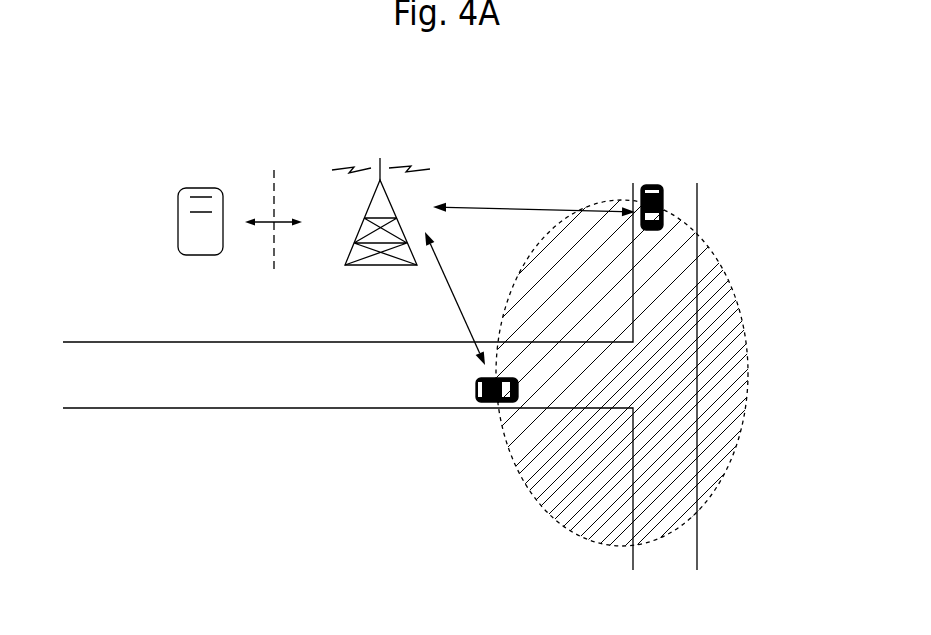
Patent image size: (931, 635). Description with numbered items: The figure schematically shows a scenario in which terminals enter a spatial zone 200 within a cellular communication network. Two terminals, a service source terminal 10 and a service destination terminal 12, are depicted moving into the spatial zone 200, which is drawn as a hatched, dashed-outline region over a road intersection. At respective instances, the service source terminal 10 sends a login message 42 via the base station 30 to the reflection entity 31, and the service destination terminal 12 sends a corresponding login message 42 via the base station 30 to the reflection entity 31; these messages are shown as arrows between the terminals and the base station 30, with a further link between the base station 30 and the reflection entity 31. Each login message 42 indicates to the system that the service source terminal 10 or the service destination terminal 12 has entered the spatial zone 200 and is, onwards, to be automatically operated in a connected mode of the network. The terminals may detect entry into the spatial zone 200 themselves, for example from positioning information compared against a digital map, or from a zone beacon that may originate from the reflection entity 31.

The service source terminal 10 is at (487, 402).
The service destination terminal 12 is at (663, 212).
The base station 30 is at (357, 222).
The reflection entity 31 is at (177, 240).
The login message 42 is at (508, 208).
The spatial zone 200 is at (715, 488).